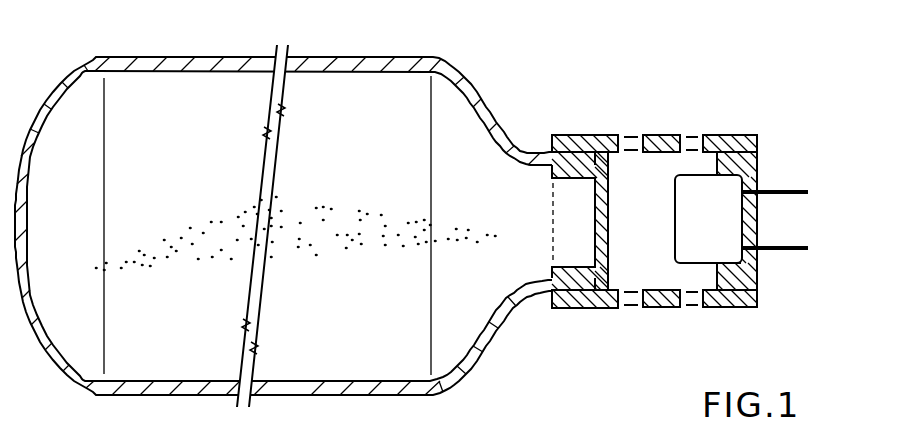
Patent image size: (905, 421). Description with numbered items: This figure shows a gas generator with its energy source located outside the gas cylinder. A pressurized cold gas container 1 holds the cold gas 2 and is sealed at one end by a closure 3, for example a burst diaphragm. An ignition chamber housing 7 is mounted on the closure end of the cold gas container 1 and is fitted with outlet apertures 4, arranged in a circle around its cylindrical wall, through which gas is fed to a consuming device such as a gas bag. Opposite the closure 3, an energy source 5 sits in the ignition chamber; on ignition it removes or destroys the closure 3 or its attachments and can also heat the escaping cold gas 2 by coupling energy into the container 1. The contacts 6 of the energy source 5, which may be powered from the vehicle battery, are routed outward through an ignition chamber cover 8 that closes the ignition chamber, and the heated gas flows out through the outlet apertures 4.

The cold gas container 1 is at (298, 52).
The cold gas 2 is at (237, 192).
The closure 3 is at (609, 192).
The outlet apertures 4 is at (688, 134).
The energy source 5 is at (731, 246).
The contacts 6 is at (813, 198).
The ignition chamber housing 7 is at (583, 309).
The ignition chamber cover 8 is at (760, 163).